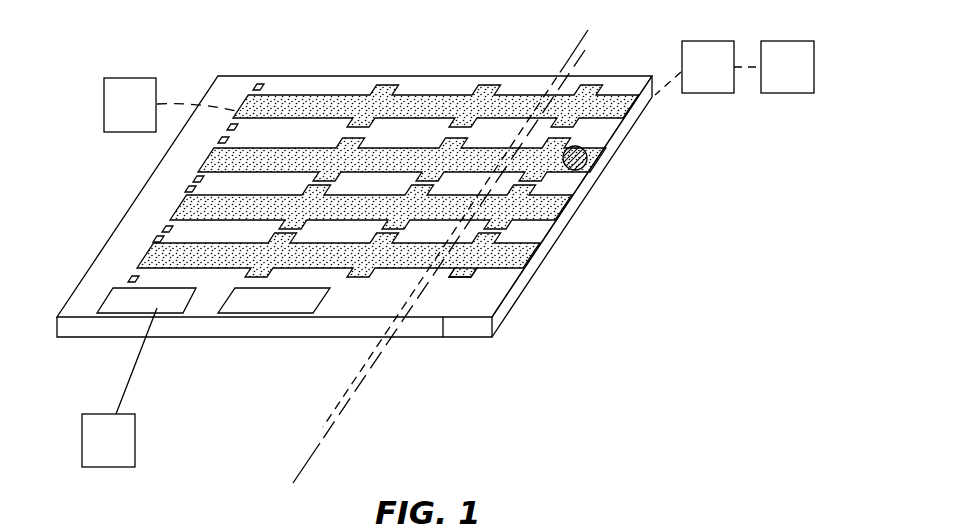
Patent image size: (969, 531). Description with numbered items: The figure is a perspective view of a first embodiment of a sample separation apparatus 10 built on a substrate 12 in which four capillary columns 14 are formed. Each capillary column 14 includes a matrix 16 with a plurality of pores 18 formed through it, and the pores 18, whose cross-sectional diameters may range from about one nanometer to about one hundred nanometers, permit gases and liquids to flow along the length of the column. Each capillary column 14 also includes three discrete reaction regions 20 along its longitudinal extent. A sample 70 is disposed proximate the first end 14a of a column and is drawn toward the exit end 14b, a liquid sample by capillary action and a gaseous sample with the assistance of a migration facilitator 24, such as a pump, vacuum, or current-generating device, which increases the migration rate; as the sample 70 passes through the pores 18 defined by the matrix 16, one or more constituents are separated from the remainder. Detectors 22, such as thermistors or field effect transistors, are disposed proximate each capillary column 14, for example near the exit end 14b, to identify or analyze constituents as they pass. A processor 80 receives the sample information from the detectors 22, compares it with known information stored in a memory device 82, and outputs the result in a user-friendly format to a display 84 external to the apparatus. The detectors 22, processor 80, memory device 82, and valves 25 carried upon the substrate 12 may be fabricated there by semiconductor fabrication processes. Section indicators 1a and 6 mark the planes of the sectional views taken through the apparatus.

The sample separation apparatus 10 is at (676, 261).
The substrate 12 is at (483, 298).
The capillary columns 14 is at (542, 272).
The first end 14a is at (620, 100).
The exit end 14b is at (247, 103).
The matrix 16 is at (343, 262).
The pores 18 is at (362, 273).
The reaction regions 20 is at (456, 286).
The detectors 22 is at (152, 238).
The migration facilitator 24 is at (459, 86).
The valves 25 is at (694, 68).
The sample 70 is at (589, 157).
The processor 80 is at (138, 304).
The memory device 82 is at (248, 302).
The display 84 is at (119, 387).
The section line for FIG. 1a is at (580, 31).
The section line for FIG. 6 is at (594, 50).